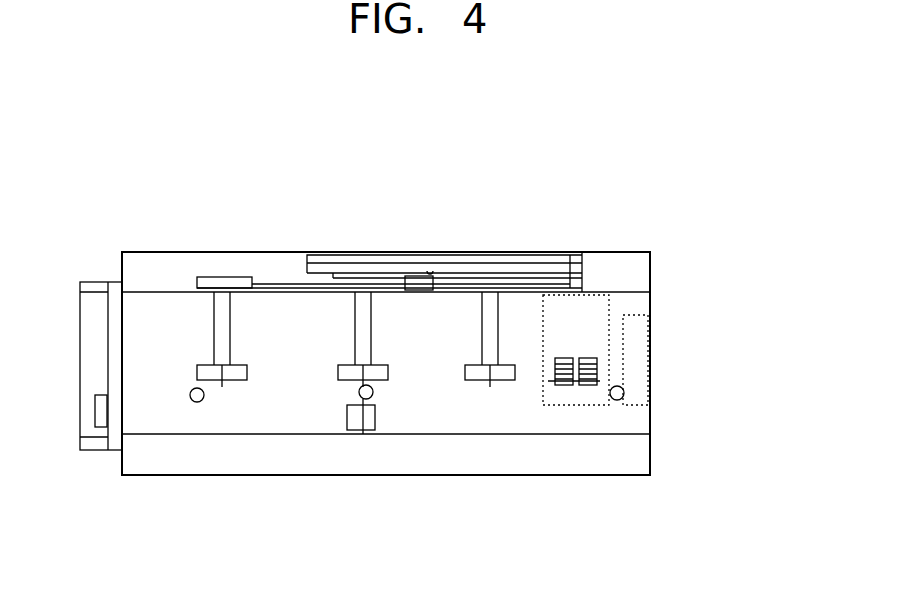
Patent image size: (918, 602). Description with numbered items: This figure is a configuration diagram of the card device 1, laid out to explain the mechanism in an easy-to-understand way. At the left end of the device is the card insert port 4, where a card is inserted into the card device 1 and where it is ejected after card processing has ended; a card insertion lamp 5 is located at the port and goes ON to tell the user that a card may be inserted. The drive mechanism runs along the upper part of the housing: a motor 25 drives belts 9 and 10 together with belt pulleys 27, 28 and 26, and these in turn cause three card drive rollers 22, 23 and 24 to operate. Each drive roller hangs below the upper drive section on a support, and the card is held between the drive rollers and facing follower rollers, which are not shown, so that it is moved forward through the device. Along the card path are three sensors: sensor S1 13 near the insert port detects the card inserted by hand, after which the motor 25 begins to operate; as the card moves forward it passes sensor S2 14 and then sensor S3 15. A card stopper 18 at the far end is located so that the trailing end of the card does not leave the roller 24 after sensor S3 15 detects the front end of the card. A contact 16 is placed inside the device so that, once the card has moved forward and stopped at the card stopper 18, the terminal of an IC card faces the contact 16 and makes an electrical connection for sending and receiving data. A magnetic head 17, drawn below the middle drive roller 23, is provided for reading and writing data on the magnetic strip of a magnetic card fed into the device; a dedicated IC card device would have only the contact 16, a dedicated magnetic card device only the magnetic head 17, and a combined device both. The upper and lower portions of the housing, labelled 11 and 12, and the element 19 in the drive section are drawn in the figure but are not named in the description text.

The card device 1 is at (671, 346).
The card insert port 4 is at (93, 300).
The card insertion lamp 5 is at (82, 425).
The belt 9 is at (544, 241).
The belt 10 is at (285, 268).
The upper wall 11 is at (159, 279).
The lower wall 12 is at (166, 450).
The sensor S1 13 is at (201, 416).
The sensor S2 14 is at (375, 411).
The sensor S3 15 is at (626, 415).
The contact 16 is at (569, 396).
The magnetic head 17 is at (353, 443).
The card stopper 18 is at (638, 345).
The drive unit 19 is at (438, 258).
The card drive roller 22 is at (237, 395).
The card drive roller 23 is at (399, 393).
The card drive roller 24 is at (508, 393).
The motor 25 is at (606, 292).
The belt pulley 26 is at (490, 258).
The belt pulley 27 is at (362, 241).
The belt pulley 28 is at (231, 257).